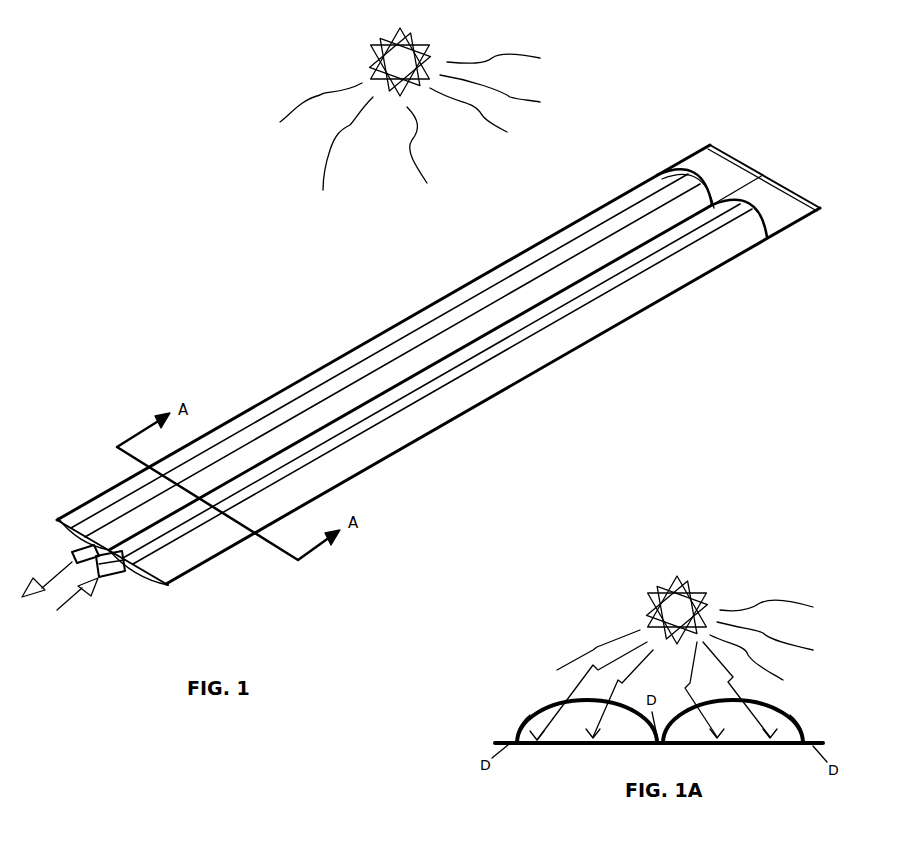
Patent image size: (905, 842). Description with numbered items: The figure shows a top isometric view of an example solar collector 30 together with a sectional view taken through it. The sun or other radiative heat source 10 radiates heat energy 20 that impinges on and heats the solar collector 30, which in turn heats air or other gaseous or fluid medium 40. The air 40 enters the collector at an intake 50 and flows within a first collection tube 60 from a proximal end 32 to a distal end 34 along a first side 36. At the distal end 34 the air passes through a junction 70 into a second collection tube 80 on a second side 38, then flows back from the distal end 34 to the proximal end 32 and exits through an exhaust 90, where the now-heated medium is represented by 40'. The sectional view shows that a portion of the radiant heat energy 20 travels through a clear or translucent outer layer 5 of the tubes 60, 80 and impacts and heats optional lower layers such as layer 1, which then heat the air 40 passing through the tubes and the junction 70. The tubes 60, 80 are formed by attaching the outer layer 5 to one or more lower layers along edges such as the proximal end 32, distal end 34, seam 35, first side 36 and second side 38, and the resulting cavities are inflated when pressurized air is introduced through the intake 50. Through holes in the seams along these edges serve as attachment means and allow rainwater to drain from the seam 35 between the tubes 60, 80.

In FIG. 1, the sun or other radiative heat source 10 is at (330, 58).
In FIG. 1A, the sun or other radiative heat source 10 is at (605, 607).
In FIG. 1, the heat energy 20 is at (295, 167).
In FIG. 1A, the heat energy 20 is at (522, 664).
In FIG. 1, the solar collector 30 is at (438, 382).
In FIG. 1, the proximal end 32 is at (145, 580).
In FIG. 1, the distal end 34 is at (807, 198).
In FIG. 1, the seam between the collection tubes 35 is at (500, 326).
In FIG. 1, the first side 36 is at (525, 377).
In FIG. 1, the second side 38 is at (420, 312).
In FIG. 1, the air or other gaseous or fluid medium 40 is at (71, 606).
In FIG. 1, the heated air or fluid medium 40' is at (47, 575).
In FIG. 1, the intake 50 is at (115, 573).
In FIG. 1, the first collection tube 60 is at (357, 452).
In FIG. 1A, the first collection tube 60 is at (828, 717).
In FIG. 1, the junction 70 is at (740, 183).
In FIG. 1, the second collection tube 80 is at (333, 375).
In FIG. 1A, the second collection tube 80 is at (497, 713).
In FIG. 1, the exhaust 90 is at (88, 547).
In FIG. 1A, the outer layer 5 is at (518, 728).
In FIG. 1A, the optional layer 1 is at (693, 745).